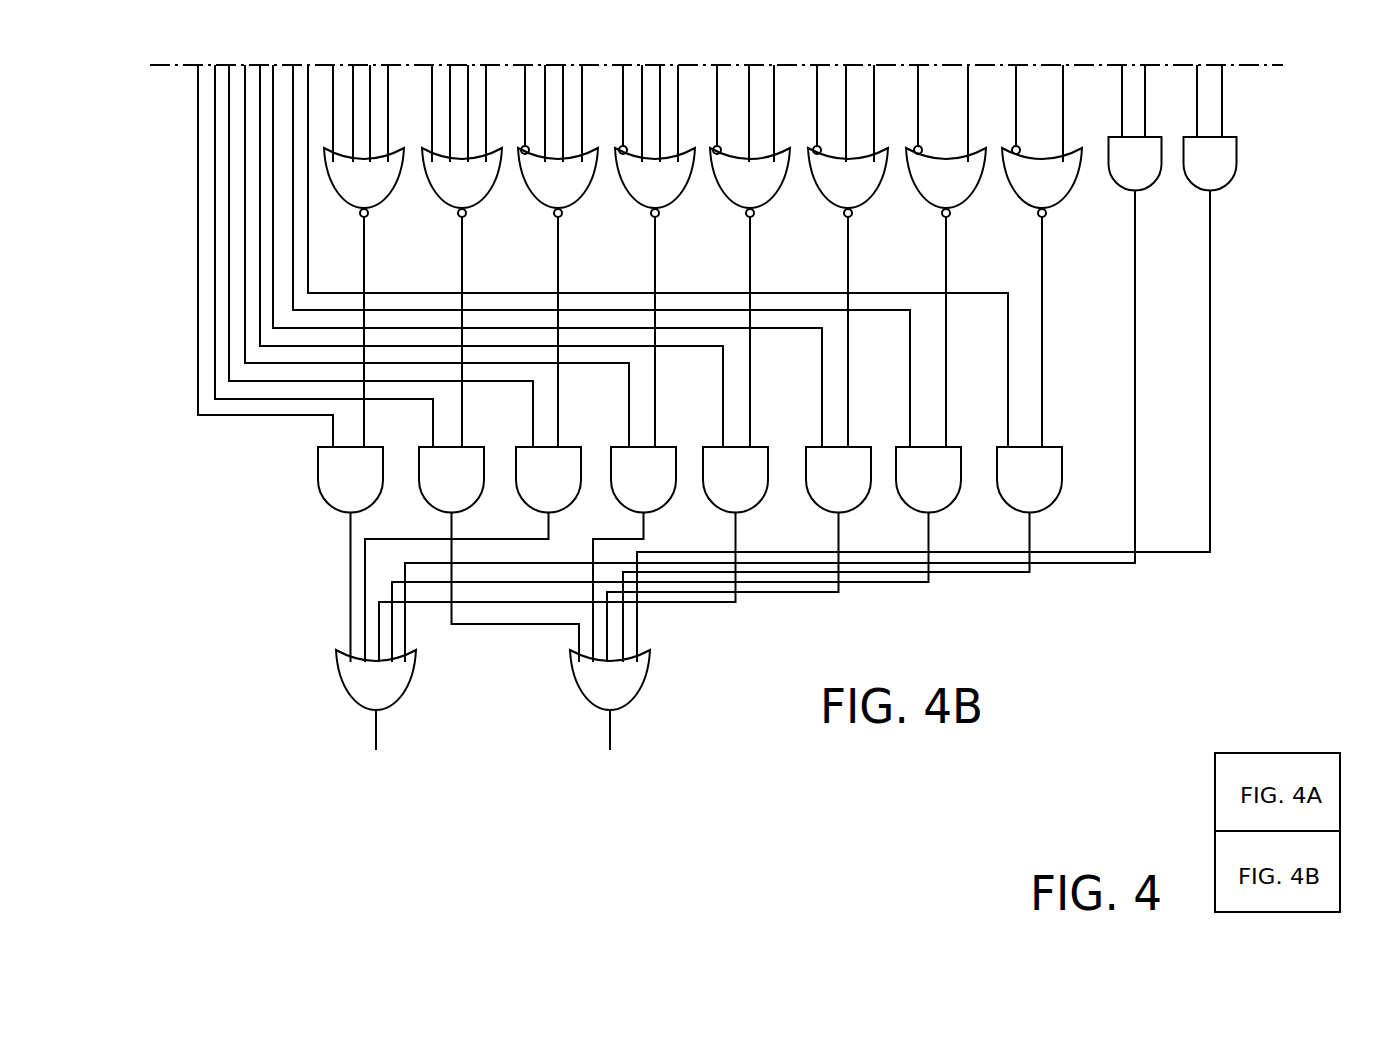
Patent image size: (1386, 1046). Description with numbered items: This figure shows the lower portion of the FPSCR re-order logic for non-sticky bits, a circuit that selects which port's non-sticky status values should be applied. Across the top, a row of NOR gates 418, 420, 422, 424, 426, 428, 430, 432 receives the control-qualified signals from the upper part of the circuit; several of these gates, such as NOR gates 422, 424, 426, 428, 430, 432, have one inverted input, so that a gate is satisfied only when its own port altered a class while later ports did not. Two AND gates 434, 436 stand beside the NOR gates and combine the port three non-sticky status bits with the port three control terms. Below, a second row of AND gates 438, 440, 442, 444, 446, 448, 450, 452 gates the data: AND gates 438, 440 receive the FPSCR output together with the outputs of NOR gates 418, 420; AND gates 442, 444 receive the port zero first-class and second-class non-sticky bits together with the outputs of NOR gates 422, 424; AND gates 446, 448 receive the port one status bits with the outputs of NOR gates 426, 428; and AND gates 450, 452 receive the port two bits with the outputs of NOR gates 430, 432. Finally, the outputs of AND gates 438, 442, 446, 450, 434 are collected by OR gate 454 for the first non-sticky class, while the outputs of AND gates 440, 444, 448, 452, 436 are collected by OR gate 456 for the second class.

The NOR gate 418 is at (342, 200).
The NOR gate 420 is at (442, 200).
The NOR gate 422 is at (538, 200).
The NOR gate 424 is at (635, 200).
The NOR gate 426 is at (730, 200).
The NOR gate 428 is at (828, 200).
The NOR gate 430 is at (922, 196).
The NOR gate 432 is at (1022, 200).
The AND gate 434 is at (1122, 189).
The AND gate 436 is at (1197, 189).
The AND gate 438 is at (320, 488).
The AND gate 440 is at (422, 447).
The AND gate 442 is at (516, 447).
The AND gate 444 is at (611, 448).
The AND gate 446 is at (703, 447).
The AND gate 448 is at (801, 451).
The AND gate 450 is at (897, 448).
The AND gate 452 is at (997, 452).
The OR gate 454 is at (350, 698).
The OR gate 456 is at (578, 698).